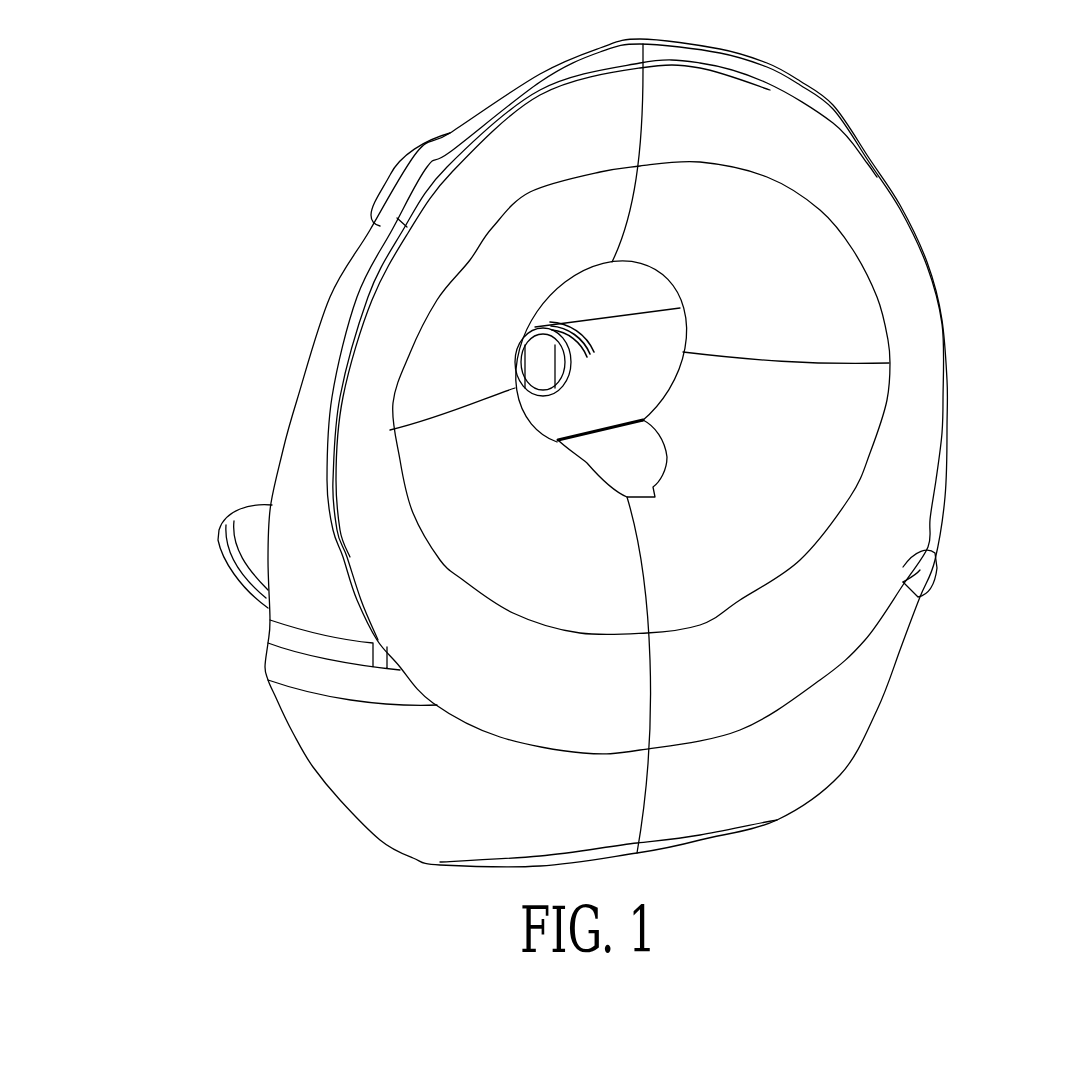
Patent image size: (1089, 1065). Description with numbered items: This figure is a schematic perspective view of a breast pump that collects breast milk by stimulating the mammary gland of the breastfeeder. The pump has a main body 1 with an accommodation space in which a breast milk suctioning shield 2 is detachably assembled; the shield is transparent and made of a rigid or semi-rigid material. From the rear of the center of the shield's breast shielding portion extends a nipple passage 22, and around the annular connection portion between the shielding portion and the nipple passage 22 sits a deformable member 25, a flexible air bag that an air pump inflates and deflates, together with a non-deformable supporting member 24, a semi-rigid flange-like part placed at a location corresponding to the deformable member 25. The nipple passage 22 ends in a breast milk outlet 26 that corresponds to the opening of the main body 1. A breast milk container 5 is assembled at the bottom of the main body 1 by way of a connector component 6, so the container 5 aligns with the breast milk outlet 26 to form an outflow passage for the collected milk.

The main body 1 is at (828, 92).
The breast milk suctioning shield 2 is at (867, 182).
The non-deformable supporting member 24 is at (613, 303).
The nipple passage 22 is at (606, 347).
The deformable member 25 is at (645, 450).
The breast milk outlet 26 is at (540, 372).
The connector component 6 is at (252, 522).
The breast milk container 5 is at (915, 618).